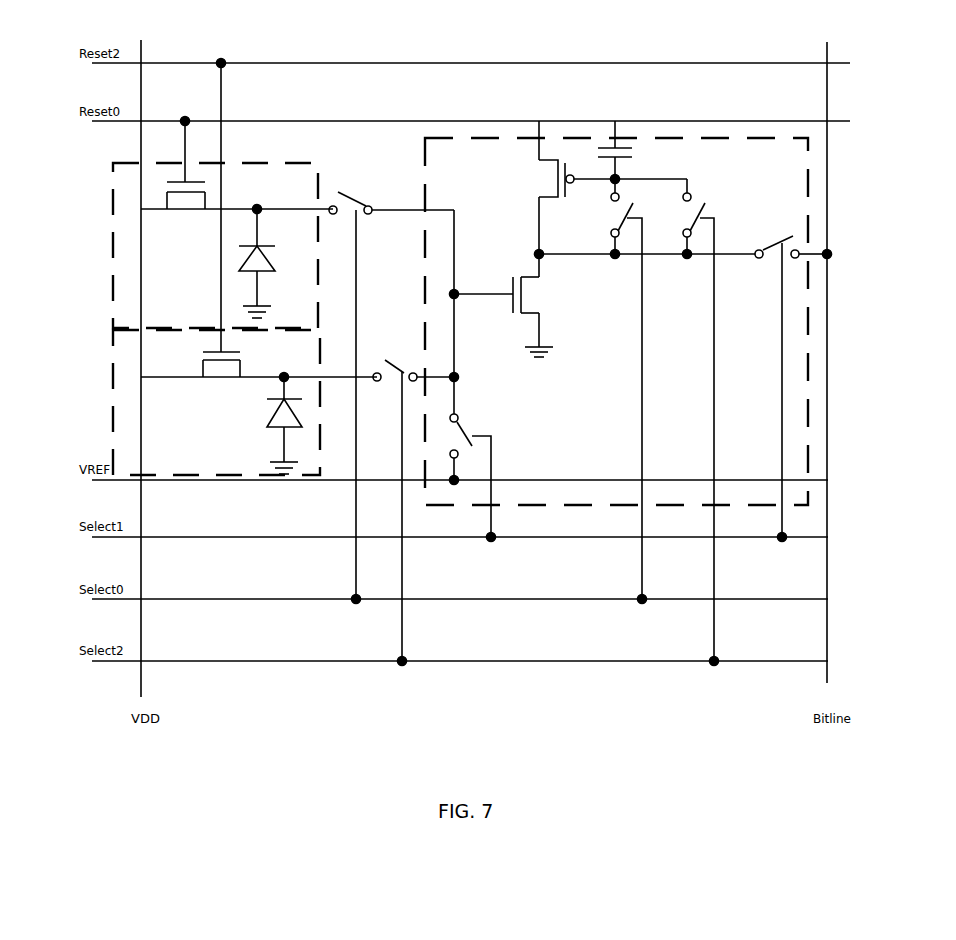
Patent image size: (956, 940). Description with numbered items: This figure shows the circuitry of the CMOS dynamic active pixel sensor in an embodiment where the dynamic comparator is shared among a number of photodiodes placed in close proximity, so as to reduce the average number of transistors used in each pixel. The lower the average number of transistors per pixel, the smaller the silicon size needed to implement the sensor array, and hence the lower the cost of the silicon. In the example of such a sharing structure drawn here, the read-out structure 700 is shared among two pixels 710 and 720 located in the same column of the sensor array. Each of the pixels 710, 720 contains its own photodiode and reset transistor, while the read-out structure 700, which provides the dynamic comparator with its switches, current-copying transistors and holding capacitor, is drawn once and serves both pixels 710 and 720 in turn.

The read-out structure 700 is at (525, 512).
The pixel 710 is at (112, 267).
The pixel 720 is at (112, 363).